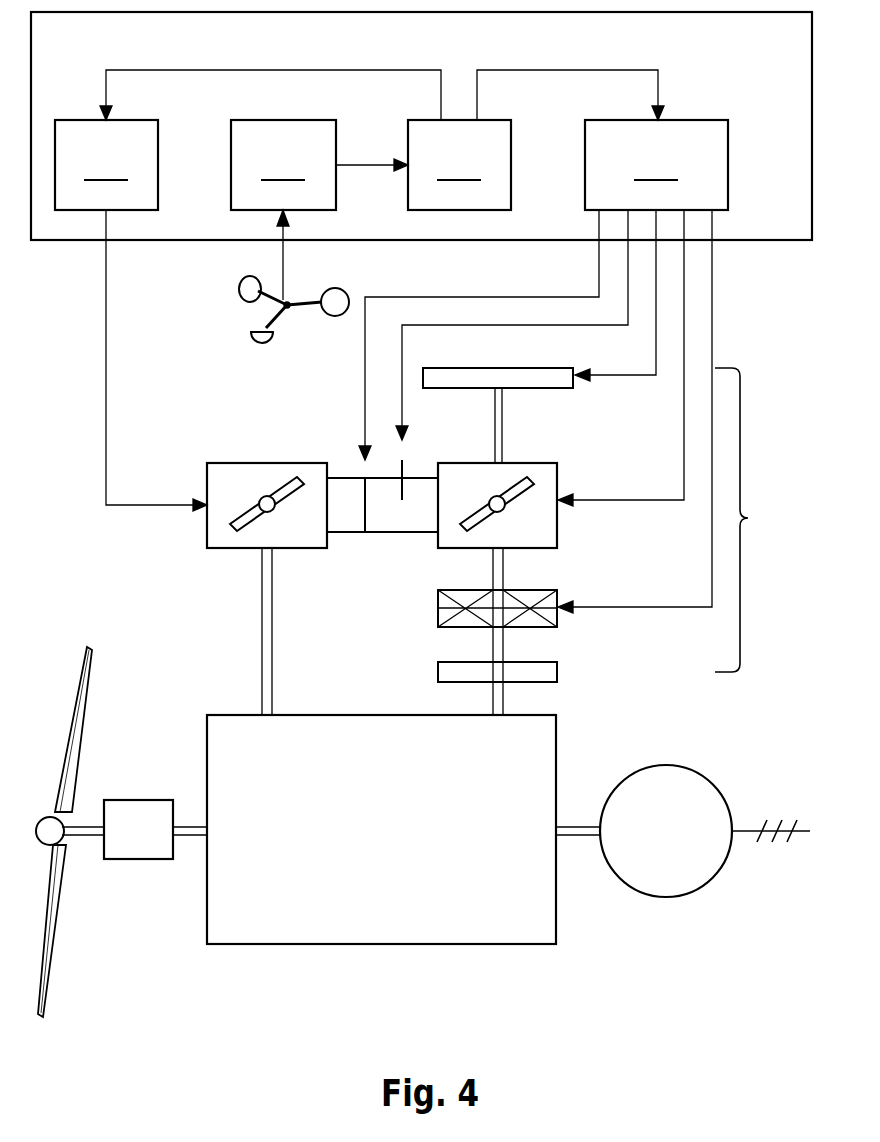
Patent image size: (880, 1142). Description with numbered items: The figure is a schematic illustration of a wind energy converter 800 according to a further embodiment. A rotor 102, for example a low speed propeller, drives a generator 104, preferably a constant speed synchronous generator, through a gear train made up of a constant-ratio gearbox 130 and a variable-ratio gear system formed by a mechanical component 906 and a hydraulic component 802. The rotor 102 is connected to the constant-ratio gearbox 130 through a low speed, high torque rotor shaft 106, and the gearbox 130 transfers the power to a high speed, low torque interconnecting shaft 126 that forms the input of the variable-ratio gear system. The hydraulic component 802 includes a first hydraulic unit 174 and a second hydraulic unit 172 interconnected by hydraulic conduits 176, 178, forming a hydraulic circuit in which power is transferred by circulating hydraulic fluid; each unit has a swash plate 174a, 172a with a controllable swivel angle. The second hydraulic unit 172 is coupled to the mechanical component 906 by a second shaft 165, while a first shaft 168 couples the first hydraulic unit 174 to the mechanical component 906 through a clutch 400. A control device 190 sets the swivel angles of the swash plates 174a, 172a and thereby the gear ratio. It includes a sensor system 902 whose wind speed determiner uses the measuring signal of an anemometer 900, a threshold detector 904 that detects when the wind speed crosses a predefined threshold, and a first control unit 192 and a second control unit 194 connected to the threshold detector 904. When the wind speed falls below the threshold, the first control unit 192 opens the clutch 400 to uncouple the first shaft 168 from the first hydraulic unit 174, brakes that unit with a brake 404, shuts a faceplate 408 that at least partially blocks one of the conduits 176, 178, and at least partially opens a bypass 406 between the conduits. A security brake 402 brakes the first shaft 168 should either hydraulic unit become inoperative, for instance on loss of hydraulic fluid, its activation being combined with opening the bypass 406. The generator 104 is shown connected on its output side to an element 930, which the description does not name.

The rotor 102 is at (45, 966).
The generator 104 is at (670, 790).
The rotor shaft 106 is at (85, 838).
The interconnecting shaft 126 is at (195, 838).
The constant-ratio gearbox 130 is at (135, 813).
The second shaft 165 is at (262, 641).
The first shaft 168 is at (503, 702).
The second hydraulic unit 172 is at (227, 482).
The swash plate 172a is at (237, 518).
The first hydraulic unit 174 is at (545, 526).
The swash plate 174a is at (545, 492).
The hydraulic conduit 176 is at (345, 478).
The hydraulic conduit 178 is at (402, 532).
The control device 190 is at (768, 214).
The first control unit 192 is at (656, 165).
The second control unit 194 is at (106, 165).
The clutch 400 is at (440, 617).
The security brake 402 is at (550, 664).
The brake 404 is at (543, 381).
The bypass 406 is at (352, 532).
The faceplate 408 is at (402, 470).
The wind energy converter 800 is at (656, 968).
The hydraulic component 802 is at (748, 518).
The anemometer 900 is at (308, 309).
The sensor system 902 is at (283, 165).
The threshold detector 904 is at (459, 165).
The mechanical component 906 is at (376, 912).
The electrical grid 930 is at (782, 800).